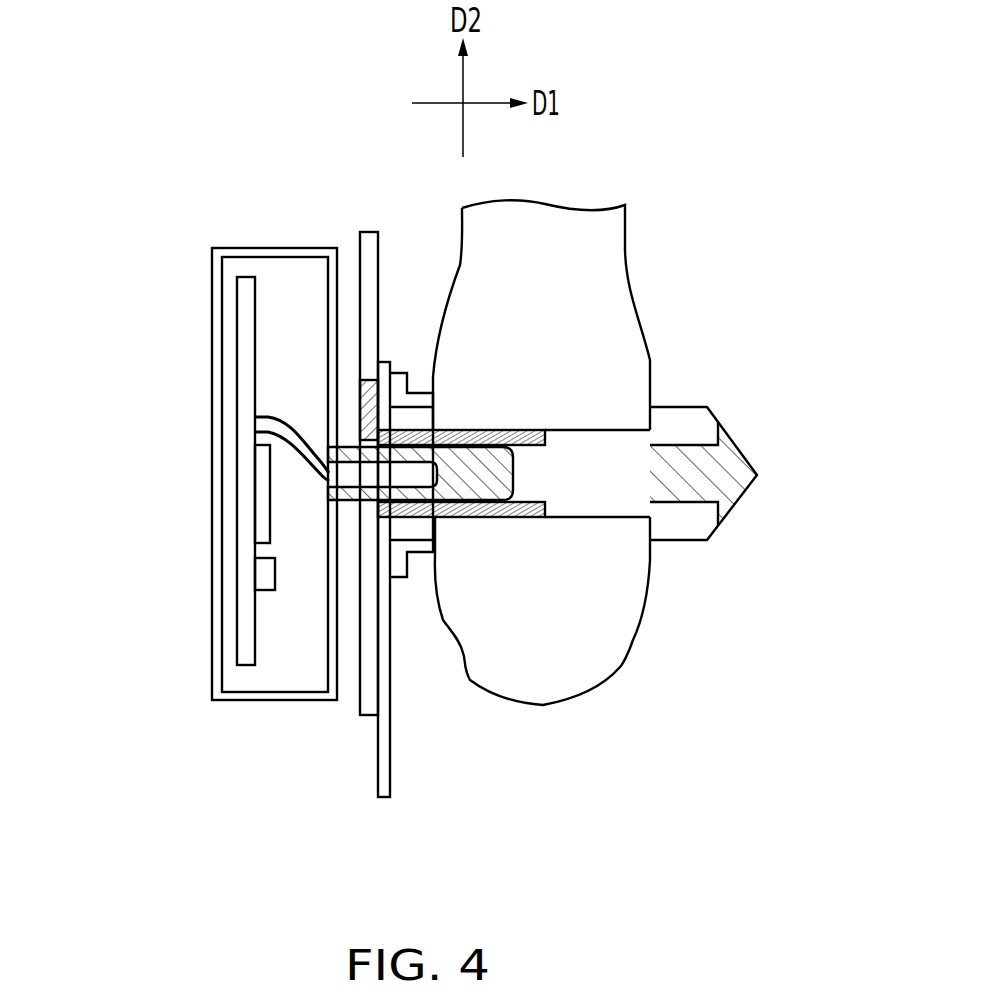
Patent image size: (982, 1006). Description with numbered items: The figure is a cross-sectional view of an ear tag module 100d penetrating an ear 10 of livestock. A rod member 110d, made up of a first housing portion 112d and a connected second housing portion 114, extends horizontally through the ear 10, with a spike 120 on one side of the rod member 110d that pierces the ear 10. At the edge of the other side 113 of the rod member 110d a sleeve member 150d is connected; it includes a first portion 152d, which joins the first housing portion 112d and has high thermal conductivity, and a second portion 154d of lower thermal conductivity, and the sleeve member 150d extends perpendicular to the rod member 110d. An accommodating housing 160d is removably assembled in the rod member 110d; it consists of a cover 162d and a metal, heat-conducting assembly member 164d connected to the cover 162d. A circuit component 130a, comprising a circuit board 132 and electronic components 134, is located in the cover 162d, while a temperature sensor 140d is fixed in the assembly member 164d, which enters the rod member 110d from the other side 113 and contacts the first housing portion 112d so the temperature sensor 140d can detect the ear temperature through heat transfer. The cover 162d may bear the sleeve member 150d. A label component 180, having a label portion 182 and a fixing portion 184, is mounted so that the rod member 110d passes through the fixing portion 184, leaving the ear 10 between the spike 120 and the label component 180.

The ear 10 is at (547, 230).
The ear tag module 100d is at (709, 826).
The rod member 110d is at (514, 630).
The first housing portion 112d is at (523, 517).
The second housing portion 114 is at (600, 517).
The other side 113 is at (368, 432).
The spike 120 is at (733, 458).
The circuit component 130a is at (155, 471).
The circuit board 132 is at (245, 492).
The electronic component 134 is at (267, 572).
The temperature sensor 140d is at (352, 470).
The sleeve member 150d is at (355, 403).
The first portion 152d is at (372, 428).
The second portion 154d is at (372, 248).
The accommodating housing 160d is at (282, 529).
The cover 162d is at (252, 700).
The assembly member 164d is at (327, 518).
The label component 180 is at (439, 626).
The label portion 182 is at (382, 747).
The fixing portion 184 is at (425, 548).